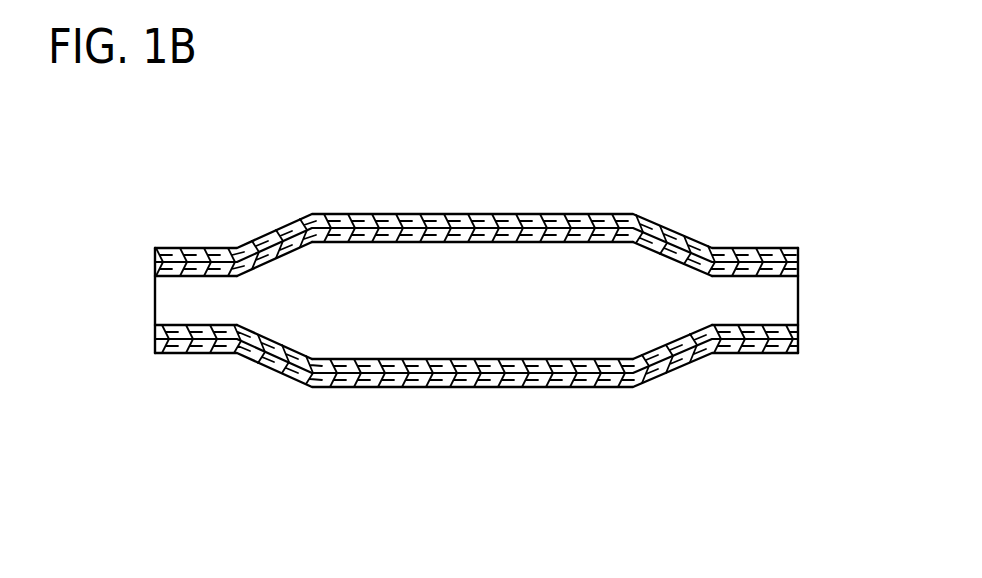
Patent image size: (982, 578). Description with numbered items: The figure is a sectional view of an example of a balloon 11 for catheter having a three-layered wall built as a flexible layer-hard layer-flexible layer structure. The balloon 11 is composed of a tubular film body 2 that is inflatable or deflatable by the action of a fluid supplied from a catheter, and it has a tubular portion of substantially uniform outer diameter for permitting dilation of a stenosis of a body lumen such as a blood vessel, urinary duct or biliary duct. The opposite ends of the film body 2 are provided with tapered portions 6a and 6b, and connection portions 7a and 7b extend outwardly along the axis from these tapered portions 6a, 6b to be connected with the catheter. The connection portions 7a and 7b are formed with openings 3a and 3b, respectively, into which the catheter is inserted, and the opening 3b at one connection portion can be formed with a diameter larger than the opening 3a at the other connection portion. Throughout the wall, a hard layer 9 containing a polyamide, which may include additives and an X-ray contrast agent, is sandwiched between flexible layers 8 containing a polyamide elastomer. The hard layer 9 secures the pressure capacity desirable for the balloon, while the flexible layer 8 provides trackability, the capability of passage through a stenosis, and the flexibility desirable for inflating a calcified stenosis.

The balloon 11 is at (137, 141).
The tubular film body 2 is at (232, 492).
The opening 3a is at (158, 310).
The opening 3b is at (798, 302).
The tapered portion 6a is at (232, 431).
The tapered portion 6b is at (637, 431).
The connection portion 7a is at (162, 260).
The connection portion 7b is at (768, 262).
The flexible layer 8 is at (413, 217).
The hard layer 9 is at (588, 228).